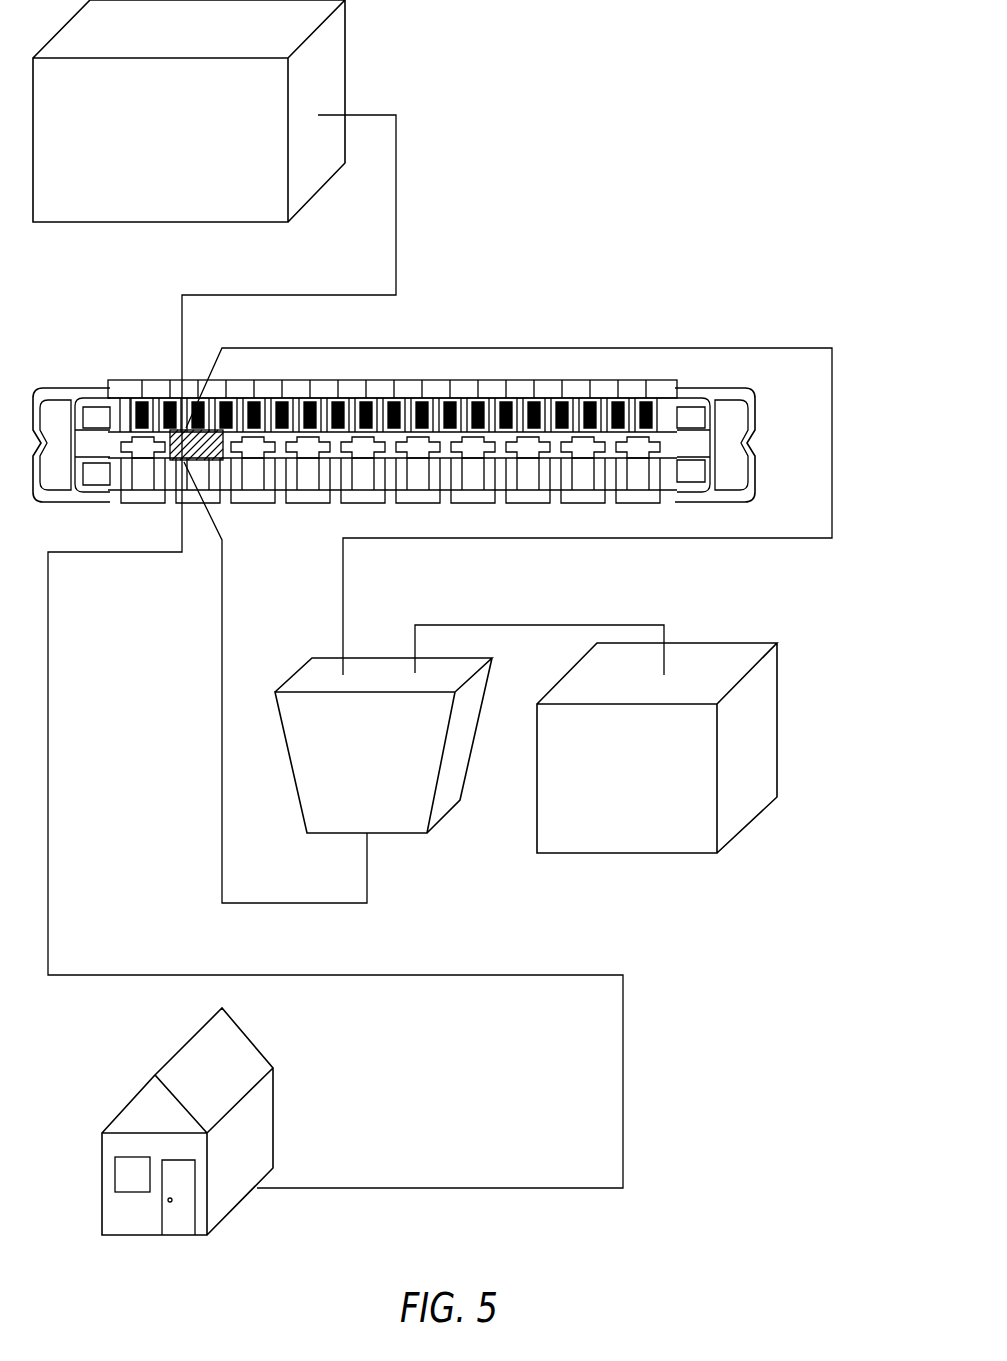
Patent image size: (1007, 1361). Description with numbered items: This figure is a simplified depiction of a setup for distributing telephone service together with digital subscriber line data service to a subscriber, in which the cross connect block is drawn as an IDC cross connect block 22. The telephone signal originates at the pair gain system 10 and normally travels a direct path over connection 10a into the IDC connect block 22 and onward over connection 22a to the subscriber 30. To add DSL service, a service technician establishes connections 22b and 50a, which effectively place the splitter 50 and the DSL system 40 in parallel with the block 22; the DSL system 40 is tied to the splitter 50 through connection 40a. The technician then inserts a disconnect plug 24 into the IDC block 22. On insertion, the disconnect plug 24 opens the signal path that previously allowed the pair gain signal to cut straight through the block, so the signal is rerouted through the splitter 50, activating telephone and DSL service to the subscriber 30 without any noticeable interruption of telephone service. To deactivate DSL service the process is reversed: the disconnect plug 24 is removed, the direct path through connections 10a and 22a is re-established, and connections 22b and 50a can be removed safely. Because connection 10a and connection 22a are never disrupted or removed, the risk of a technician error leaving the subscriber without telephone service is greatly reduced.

The pair gain system 10 is at (348, 44).
The connection 10a is at (397, 240).
The IDC cross connect block 22 is at (755, 425).
The connection 22a is at (623, 1113).
The connection 22b is at (832, 362).
The disconnect plug 24 is at (200, 462).
The subscriber 30 is at (273, 1113).
The DSL system 40 is at (777, 680).
The connection 40a is at (693, 615).
The splitter 50 is at (490, 678).
The connection 50a is at (222, 634).